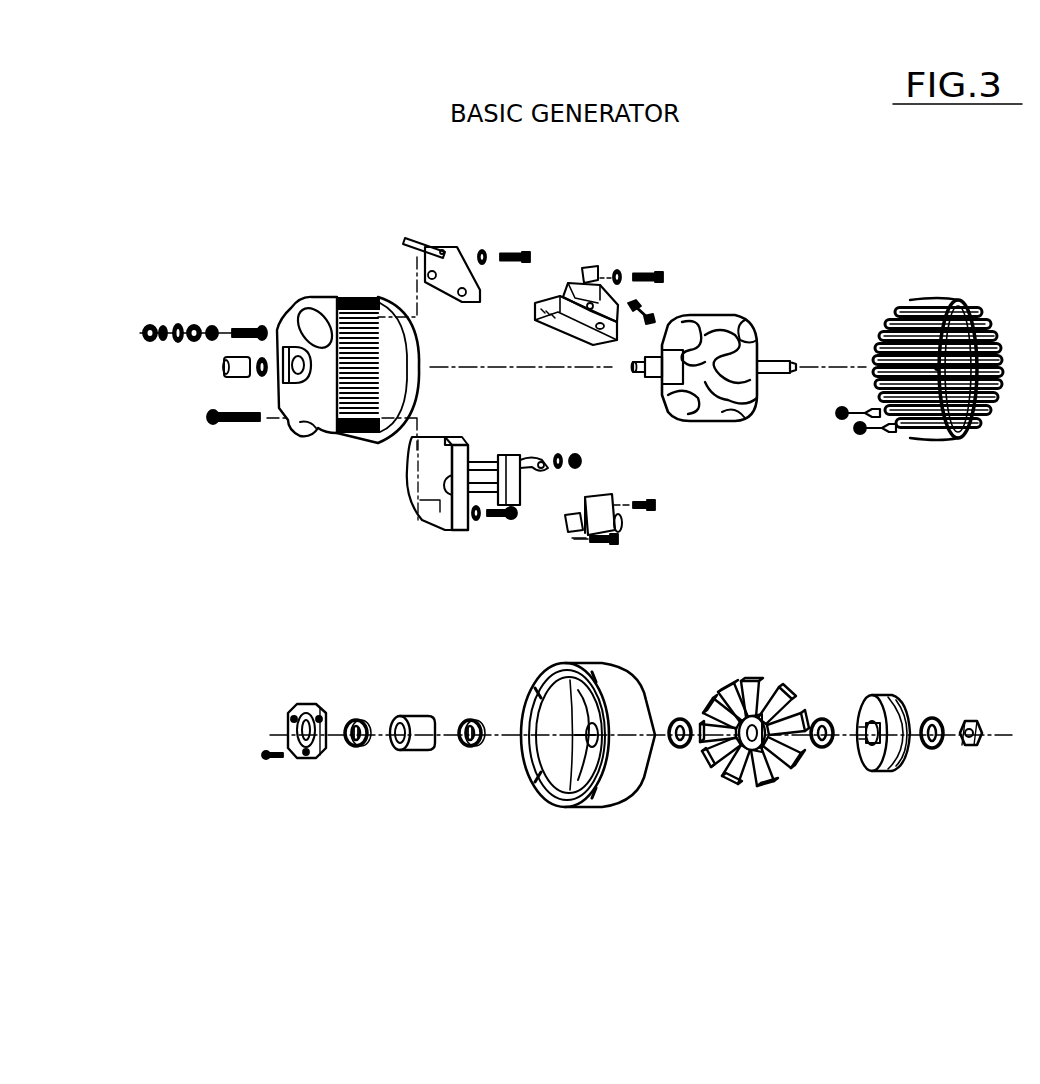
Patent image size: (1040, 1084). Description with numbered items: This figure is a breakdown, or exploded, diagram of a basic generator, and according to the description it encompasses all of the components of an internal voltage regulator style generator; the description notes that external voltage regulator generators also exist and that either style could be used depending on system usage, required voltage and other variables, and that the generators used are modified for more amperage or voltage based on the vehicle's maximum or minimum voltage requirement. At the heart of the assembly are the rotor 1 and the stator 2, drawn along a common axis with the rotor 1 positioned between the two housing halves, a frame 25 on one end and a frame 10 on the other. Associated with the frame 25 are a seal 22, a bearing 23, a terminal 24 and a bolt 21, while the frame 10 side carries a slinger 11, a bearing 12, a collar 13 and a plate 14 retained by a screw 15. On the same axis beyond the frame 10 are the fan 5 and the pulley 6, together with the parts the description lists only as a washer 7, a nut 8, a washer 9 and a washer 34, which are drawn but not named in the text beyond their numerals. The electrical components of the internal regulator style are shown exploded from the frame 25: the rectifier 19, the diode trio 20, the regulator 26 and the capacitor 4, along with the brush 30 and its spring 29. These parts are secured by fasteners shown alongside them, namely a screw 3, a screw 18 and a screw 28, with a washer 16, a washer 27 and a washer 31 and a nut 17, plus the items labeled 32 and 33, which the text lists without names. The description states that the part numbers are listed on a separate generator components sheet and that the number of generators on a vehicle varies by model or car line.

The rotor 1 is at (730, 318).
The stator 2 is at (936, 300).
The screw 3 is at (643, 500).
The capacitor 4 is at (622, 530).
The fan 5 is at (773, 683).
The pulley 6 is at (880, 706).
The lock washer 7 is at (935, 716).
The nut 8 is at (976, 720).
The spacer washer 9 is at (680, 748).
The frame 10 is at (585, 808).
The slinger 11 is at (478, 750).
The bearing 12 is at (422, 752).
The collar 13 is at (362, 748).
The plate 14 is at (327, 758).
The screw 15 is at (278, 760).
The washer 16 is at (590, 542).
The nut 17 is at (575, 456).
The screw 18 is at (514, 522).
The rectifier 19 is at (450, 530).
The diode trio 20 is at (480, 457).
The bolt 21 is at (225, 426).
The seal 22 is at (258, 380).
The bearing 23 is at (225, 373).
The terminal 24 is at (142, 318).
The frame 25 is at (368, 298).
The regulator 26 is at (430, 233).
The washer 27 is at (490, 242).
The screw 28 is at (542, 236).
The spring 29 is at (548, 326).
The brush 30 is at (600, 271).
The washer 31 is at (656, 275).
The bolt 32 is at (664, 290).
The terminal screw 33 is at (650, 311).
The spacer washer 34 is at (822, 748).